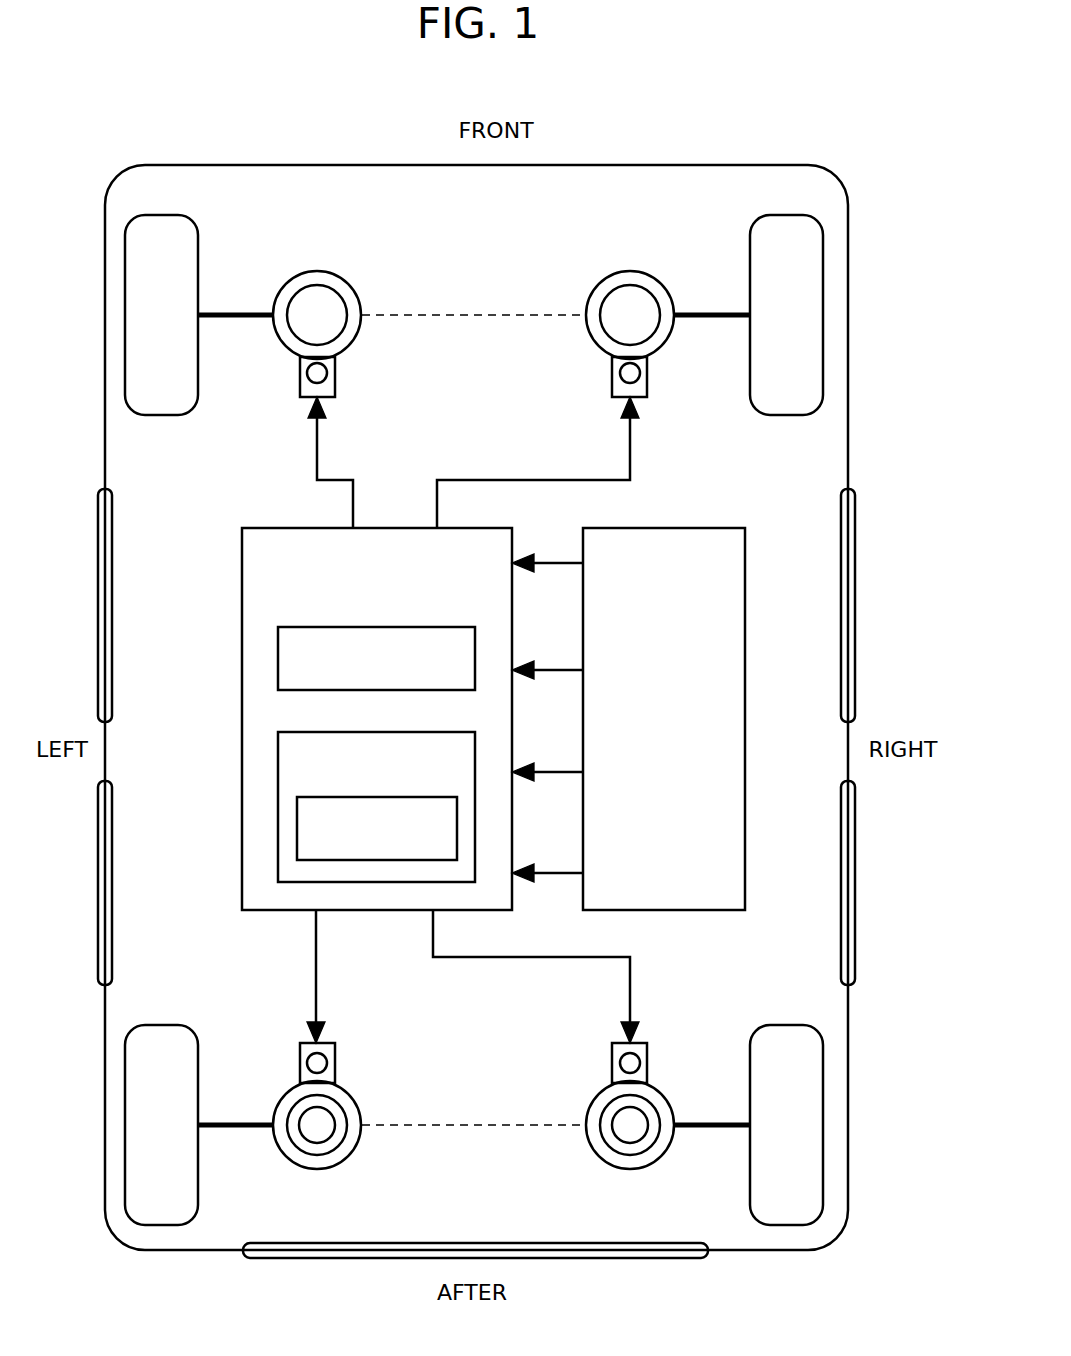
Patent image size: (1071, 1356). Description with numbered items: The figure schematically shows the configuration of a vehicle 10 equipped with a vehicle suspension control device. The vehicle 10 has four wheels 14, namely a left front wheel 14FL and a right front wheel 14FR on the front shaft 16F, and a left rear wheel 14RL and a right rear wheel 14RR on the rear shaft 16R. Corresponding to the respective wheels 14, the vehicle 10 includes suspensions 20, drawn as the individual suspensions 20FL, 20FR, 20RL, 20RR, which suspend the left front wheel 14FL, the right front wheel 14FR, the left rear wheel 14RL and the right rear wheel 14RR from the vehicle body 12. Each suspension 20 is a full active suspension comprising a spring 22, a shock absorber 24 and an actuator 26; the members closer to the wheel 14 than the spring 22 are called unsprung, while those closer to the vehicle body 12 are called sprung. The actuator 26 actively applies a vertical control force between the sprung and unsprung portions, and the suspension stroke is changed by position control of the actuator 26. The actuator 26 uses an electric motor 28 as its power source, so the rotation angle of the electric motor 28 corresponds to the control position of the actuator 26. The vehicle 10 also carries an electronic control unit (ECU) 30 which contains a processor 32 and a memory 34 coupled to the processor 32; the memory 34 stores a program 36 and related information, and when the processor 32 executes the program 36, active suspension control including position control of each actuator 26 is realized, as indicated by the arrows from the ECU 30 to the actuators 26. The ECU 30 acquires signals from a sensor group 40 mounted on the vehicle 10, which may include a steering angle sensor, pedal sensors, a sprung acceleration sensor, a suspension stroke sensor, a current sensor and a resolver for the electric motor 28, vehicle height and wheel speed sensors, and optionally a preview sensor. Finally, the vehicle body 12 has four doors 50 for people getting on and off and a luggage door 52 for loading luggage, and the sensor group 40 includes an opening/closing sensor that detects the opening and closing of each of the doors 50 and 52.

The vehicle 10 is at (476, 671).
The vehicle body 12 is at (258, 165).
The wheels 14 is at (469, 720).
The left front wheel 14FL is at (160, 418).
The right front wheel 14FR is at (789, 418).
The left rear wheel 14RL is at (160, 1024).
The right rear wheel 14RR is at (785, 1024).
The front shaft 16F is at (450, 320).
The rear shaft 16R is at (464, 1120).
The suspensions 20 is at (466, 697).
The suspension 20FL is at (396, 229).
The suspension 20FR is at (596, 234).
The suspension 20RL is at (393, 1044).
The suspension 20RR is at (538, 1042).
The spring 22 is at (311, 273).
The shock absorber 24 is at (345, 305).
The actuator 26 is at (302, 398).
The electric motor 28 is at (300, 386).
The electronic control unit (ECU) 30 is at (410, 720).
The processor 32 is at (278, 658).
The memory 34 is at (278, 766).
The program 36 is at (297, 836).
The sensor group 40 is at (745, 683).
The doors 50 is at (98, 597).
The luggage door 52 is at (525, 1259).